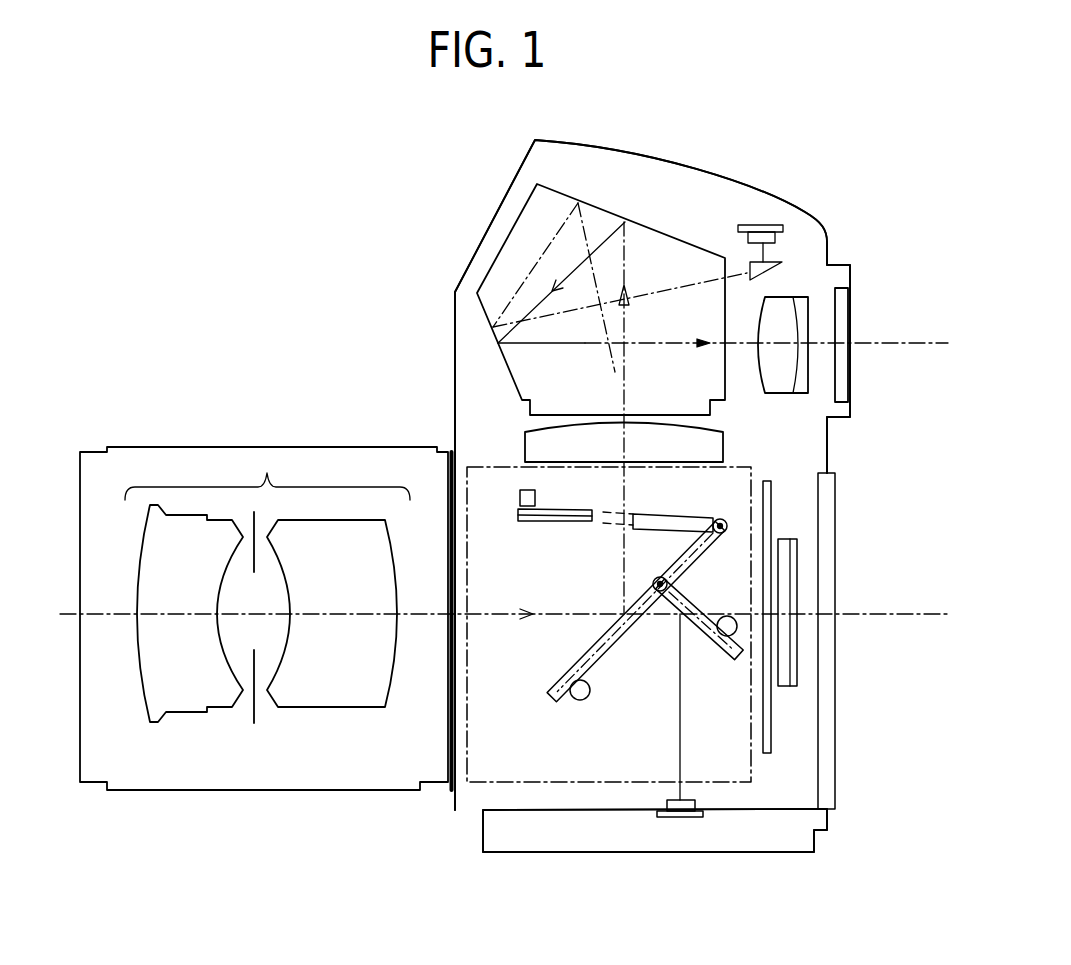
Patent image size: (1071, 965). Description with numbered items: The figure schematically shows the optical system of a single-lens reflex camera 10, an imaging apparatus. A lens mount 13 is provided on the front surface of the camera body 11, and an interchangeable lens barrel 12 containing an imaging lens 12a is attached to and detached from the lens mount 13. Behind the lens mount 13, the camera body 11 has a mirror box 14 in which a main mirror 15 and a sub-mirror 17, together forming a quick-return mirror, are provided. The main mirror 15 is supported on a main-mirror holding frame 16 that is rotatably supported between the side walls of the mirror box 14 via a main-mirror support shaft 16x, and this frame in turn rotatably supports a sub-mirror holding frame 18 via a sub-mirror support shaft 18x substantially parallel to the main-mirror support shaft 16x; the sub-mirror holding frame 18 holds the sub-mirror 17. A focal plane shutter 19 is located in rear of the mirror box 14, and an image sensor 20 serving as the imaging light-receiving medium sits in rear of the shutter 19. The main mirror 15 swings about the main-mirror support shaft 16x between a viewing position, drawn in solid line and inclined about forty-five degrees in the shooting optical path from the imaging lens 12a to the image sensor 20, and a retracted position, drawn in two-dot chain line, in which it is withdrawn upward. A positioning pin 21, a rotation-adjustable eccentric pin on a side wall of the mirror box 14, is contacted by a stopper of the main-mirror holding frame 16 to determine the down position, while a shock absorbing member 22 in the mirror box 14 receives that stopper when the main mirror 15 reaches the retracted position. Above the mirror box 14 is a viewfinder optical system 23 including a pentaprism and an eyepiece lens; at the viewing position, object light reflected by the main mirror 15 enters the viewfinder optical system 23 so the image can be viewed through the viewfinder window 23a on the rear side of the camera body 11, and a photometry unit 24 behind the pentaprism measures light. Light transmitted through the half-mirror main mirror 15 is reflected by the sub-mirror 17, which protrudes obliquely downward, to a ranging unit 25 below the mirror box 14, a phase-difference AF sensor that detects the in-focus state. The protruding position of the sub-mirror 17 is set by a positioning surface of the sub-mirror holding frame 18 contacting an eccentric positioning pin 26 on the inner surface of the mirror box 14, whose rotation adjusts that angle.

The camera 10 is at (255, 266).
The camera body 11 is at (546, 842).
The lens barrel 12 is at (258, 773).
The imaging lens 12a is at (267, 473).
The lens mount 13 is at (447, 463).
The mirror box 14 is at (722, 775).
The main mirror 15 is at (593, 513).
The main-mirror holding frame 16 is at (577, 522).
The main-mirror support shaft 16x is at (720, 519).
The sub-mirror 17 is at (691, 601).
The sub-mirror holding frame 18 is at (749, 652).
The sub-mirror support shaft 18x is at (658, 577).
The focal plane shutter 19 is at (771, 744).
The image sensor 20 is at (787, 686).
The positioning pin 21 is at (585, 700).
The shock absorbing member 22 is at (520, 497).
The viewfinder optical system 23 is at (698, 267).
The viewfinder window 23a is at (843, 373).
The photometry unit 24 is at (765, 233).
The ranging unit 25 is at (695, 817).
The positioning pin 26 is at (737, 625).